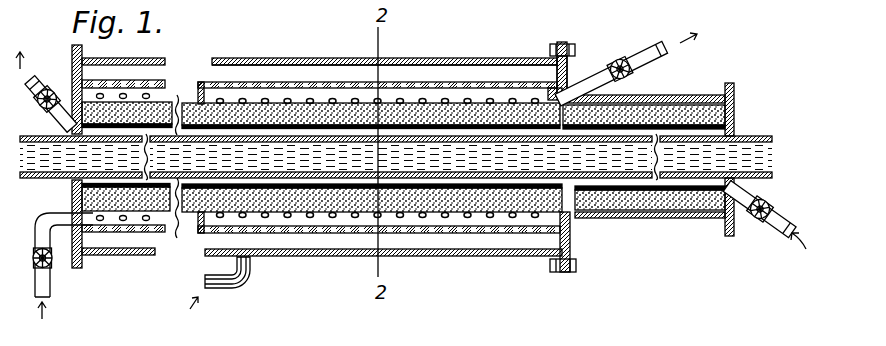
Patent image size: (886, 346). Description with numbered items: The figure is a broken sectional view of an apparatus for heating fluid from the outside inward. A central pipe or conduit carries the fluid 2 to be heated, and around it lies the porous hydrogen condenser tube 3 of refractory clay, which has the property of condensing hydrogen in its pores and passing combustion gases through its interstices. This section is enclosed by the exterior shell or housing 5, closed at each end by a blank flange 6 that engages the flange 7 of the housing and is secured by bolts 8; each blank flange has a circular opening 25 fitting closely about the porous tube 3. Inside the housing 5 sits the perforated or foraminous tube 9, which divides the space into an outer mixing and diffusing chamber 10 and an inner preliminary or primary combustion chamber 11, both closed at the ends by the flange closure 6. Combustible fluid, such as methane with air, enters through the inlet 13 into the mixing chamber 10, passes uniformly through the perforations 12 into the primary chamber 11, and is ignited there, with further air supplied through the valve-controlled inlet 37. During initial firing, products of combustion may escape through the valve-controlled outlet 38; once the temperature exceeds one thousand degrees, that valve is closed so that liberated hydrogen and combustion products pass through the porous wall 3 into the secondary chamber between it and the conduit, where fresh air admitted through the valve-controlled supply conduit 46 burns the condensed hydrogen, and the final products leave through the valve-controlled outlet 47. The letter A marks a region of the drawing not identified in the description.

The fluid to be heated 2 is at (760, 149).
The porous hydrogen condenser tube 3 is at (735, 108).
The exterior shell or housing 5 is at (460, 60).
The blank flange 6 is at (574, 79).
The flange of the housing 7 is at (557, 43).
The bolt 8 is at (570, 58).
The perforated or foraminous tube 9 is at (286, 84).
The mixing and diffusing chamber 10 is at (232, 70).
The preliminary or primary combustion chamber 11 is at (202, 99).
The perforations 12 is at (328, 100).
The inlet for combustible fluids 13 is at (212, 282).
The circular opening 25 is at (574, 218).
The air inlet 37 is at (50, 286).
The outlet 38 is at (660, 62).
The supply conduit 46 is at (772, 228).
The outlet means 47 is at (60, 77).
The inner wall A is at (226, 130).